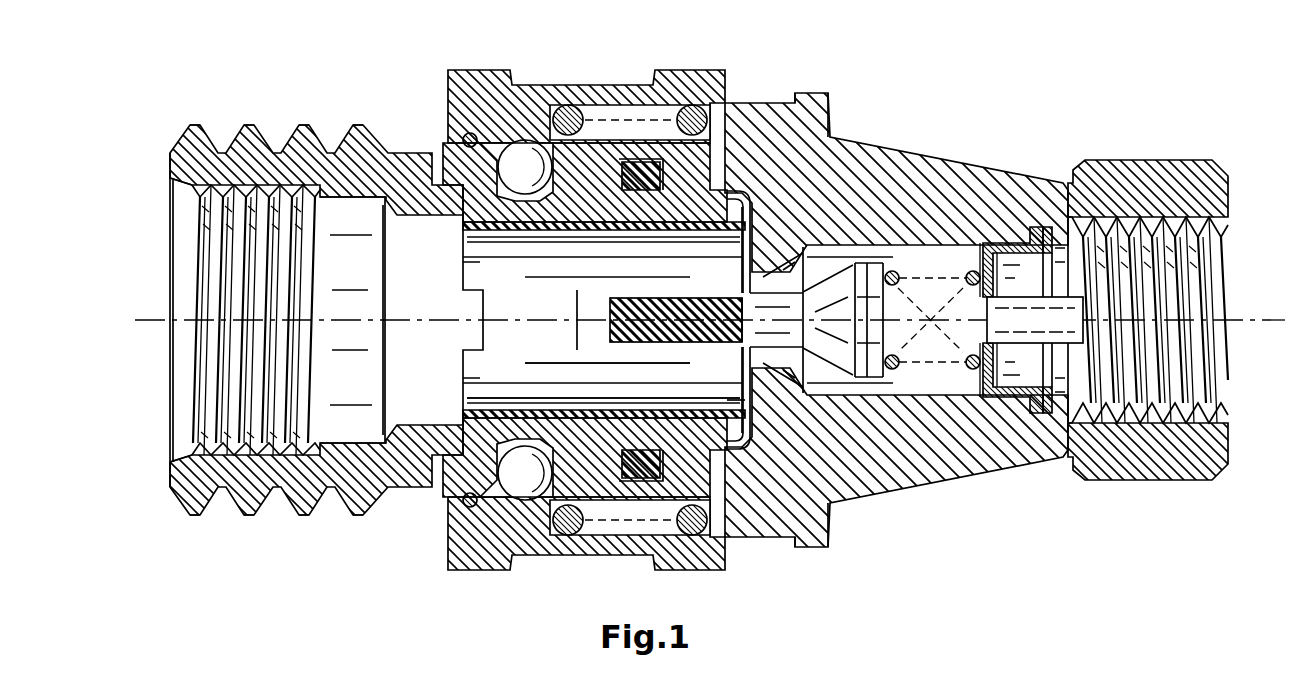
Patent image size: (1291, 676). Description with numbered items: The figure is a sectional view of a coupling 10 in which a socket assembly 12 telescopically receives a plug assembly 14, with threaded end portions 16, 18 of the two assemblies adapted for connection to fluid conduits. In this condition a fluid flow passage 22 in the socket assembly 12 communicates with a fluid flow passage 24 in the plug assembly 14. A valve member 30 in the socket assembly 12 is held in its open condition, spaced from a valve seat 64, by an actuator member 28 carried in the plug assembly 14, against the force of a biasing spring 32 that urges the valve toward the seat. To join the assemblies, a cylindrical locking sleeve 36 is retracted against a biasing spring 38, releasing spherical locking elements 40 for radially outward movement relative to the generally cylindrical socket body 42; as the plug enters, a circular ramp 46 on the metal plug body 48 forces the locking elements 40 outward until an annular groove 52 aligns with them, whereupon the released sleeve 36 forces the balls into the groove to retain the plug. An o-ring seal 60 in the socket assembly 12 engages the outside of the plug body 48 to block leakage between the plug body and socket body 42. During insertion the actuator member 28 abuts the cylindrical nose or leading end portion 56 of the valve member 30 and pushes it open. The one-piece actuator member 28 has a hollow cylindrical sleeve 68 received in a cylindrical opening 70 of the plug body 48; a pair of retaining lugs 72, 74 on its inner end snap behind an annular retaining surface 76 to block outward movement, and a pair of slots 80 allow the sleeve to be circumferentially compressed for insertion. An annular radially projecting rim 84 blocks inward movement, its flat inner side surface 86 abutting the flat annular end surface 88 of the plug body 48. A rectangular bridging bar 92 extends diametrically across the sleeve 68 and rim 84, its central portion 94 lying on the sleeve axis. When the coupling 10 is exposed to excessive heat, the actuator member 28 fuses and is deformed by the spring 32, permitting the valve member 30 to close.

The coupling 10 is at (995, 60).
The socket assembly 12 is at (1068, 128).
The plug assembly 14 is at (272, 95).
The threaded end portion 16 is at (1197, 383).
The threaded end portion 18 is at (235, 402).
The fluid flow passage 22 is at (925, 380).
The fluid flow passage 24 is at (345, 420).
The actuator member 28 is at (790, 215).
The valve member 30 is at (850, 385).
The biasing spring 32 is at (893, 270).
The locking sleeve 36 is at (608, 548).
The biasing spring 38 is at (690, 107).
The locking elements 40 is at (526, 165).
The socket body 42 is at (828, 548).
The circular ramp 46 is at (587, 190).
The plug body 48 is at (323, 128).
The annular groove 52 is at (520, 443).
The leading end portion 56 is at (780, 335).
The o-ring seal 60 is at (630, 455).
The valve seat 64 is at (752, 235).
The cylindrical sleeve 68 is at (640, 410).
The cylindrical opening 70 is at (557, 230).
The retaining lug 72 is at (464, 224).
The retaining lug 74 is at (465, 410).
The annular retaining surface 76 is at (464, 262).
The slots 80 is at (513, 353).
The rim 84 is at (737, 417).
The inner side surface 86 is at (690, 412).
The end surface 88 is at (738, 180).
The bridging bar 92 is at (640, 300).
The central portion 94 is at (720, 298).